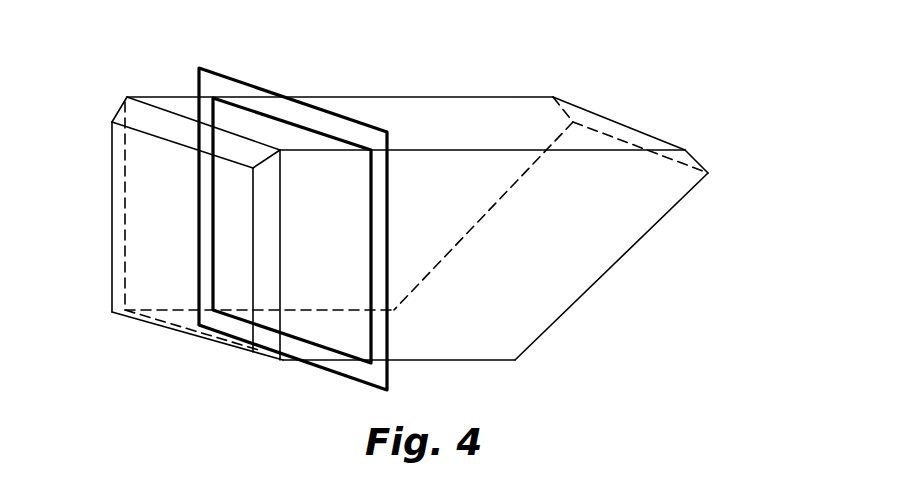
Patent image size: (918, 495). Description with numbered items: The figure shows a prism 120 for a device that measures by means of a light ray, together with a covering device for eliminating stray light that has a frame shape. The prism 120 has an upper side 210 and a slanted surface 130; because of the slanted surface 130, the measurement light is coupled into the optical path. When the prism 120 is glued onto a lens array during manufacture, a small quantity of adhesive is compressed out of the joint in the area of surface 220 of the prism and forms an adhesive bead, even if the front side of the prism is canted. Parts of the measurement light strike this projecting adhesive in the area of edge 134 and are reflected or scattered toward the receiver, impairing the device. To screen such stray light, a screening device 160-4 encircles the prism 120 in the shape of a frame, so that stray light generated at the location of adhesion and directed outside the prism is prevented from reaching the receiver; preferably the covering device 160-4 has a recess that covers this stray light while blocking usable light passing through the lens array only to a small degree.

The prism 120 is at (405, 97).
The slanted surface 130 is at (610, 195).
The edge 134 is at (135, 122).
The screening device 160-4 is at (270, 95).
The upper side 210 is at (505, 120).
The surface 220 is at (172, 203).